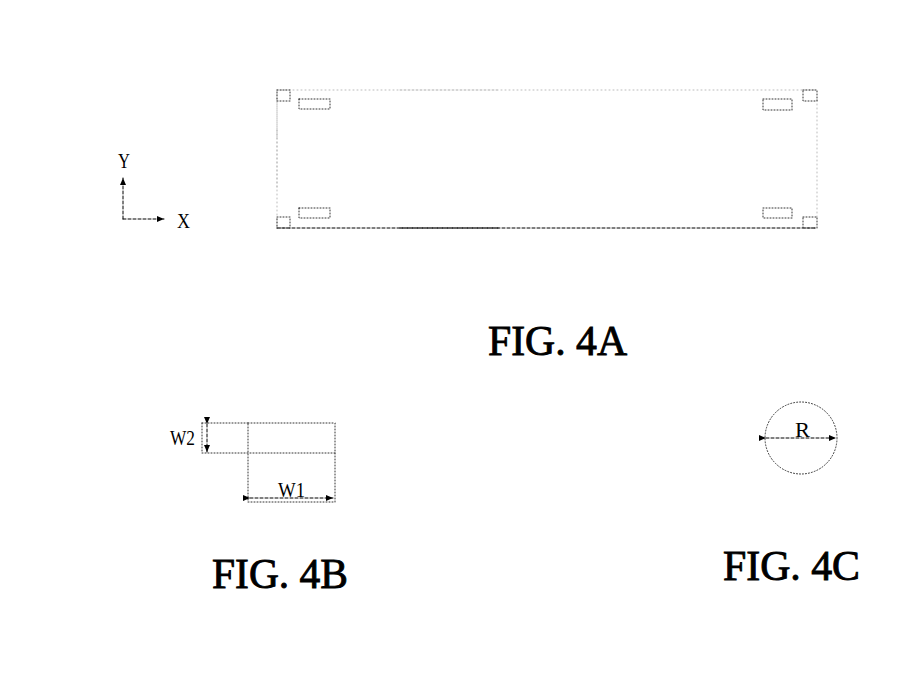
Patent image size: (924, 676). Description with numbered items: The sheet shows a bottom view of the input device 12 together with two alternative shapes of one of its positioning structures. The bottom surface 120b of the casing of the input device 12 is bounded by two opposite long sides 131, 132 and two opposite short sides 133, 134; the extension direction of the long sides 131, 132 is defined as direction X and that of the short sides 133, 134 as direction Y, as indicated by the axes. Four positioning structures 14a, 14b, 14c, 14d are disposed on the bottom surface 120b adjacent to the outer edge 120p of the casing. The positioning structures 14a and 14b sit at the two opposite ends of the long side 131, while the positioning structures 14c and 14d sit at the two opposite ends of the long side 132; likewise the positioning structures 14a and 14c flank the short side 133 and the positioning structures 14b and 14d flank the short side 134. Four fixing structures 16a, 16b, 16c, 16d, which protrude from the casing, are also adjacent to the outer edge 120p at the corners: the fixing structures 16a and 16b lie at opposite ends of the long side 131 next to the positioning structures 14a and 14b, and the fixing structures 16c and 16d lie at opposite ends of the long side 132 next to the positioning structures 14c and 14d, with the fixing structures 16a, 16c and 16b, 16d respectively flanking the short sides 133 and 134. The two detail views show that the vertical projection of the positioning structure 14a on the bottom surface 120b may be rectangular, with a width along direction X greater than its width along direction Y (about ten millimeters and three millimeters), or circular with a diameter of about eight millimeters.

In FIG. 4A, the input device 12 is at (598, 140).
In FIG. 4A, the bottom surface 120b is at (527, 140).
In FIG. 4A, the outer edge 120p is at (276, 121).
In FIG. 4A, the long side 131 is at (436, 90).
In FIG. 4A, the long side 132 is at (436, 228).
In FIG. 4A, the short side 133 is at (276, 158).
In FIG. 4A, the short side 134 is at (818, 154).
In FIG. 4A, the positioning structure 14a is at (318, 100).
In FIG. 4B, the positioning structure 14a is at (230, 383).
In FIG. 4C, the positioning structure 14a is at (750, 381).
In FIG. 4A, the positioning structure 14b is at (772, 100).
In FIG. 4A, the positioning structure 14c is at (318, 218).
In FIG. 4A, the positioning structure 14d is at (772, 218).
In FIG. 4A, the fixing structure 16a is at (278, 90).
In FIG. 4A, the fixing structure 16b is at (816, 90).
In FIG. 4A, the fixing structure 16c is at (278, 228).
In FIG. 4A, the fixing structure 16d is at (816, 228).